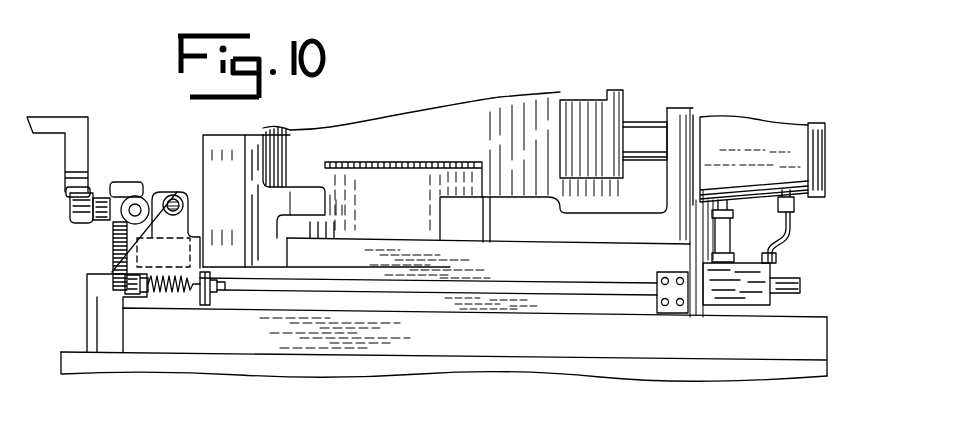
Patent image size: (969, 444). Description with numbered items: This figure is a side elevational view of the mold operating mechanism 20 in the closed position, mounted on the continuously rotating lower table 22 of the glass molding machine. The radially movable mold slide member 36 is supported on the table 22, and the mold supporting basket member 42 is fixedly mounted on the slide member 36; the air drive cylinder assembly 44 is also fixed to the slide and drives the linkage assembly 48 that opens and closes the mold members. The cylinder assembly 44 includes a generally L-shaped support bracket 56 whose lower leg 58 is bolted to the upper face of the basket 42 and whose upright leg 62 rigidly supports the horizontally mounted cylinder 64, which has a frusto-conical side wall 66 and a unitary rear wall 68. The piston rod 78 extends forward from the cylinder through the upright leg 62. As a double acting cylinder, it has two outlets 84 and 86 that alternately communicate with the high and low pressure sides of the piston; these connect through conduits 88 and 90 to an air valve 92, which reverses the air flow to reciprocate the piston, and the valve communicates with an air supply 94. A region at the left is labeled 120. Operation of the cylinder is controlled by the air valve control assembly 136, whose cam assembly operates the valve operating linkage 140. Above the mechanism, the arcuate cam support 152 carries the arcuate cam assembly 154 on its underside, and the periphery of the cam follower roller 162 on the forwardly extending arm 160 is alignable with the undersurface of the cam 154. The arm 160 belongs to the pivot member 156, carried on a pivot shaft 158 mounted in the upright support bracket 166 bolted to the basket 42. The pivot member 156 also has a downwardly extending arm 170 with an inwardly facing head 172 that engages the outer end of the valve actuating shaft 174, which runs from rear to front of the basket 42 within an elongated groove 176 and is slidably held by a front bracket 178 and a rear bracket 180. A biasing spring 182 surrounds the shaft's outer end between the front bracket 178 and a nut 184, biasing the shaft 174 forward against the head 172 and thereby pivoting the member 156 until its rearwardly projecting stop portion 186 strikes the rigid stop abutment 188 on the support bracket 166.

The mold operating mechanism 20 is at (641, 106).
The lower table 22 is at (175, 384).
The mold slide member 36 is at (829, 344).
The mold supporting basket member 42 is at (397, 303).
The air drive cylinder assembly 44 is at (773, 121).
The linkage assembly 48 is at (522, 185).
The support bracket 56 is at (617, 224).
The lower leg 58 is at (571, 236).
The upright leg 62 is at (678, 190).
The cylinder 64 is at (720, 137).
The frusto-conical side wall 66 is at (797, 132).
The rear wall 68 is at (817, 175).
The piston rod 78 is at (648, 122).
The outlet 84 is at (798, 219).
The outlet 86 is at (733, 200).
The conduit 88 is at (792, 247).
The conduit 90 is at (733, 232).
The air valve 92 is at (736, 293).
The air supply 94 is at (808, 293).
The block 120 is at (200, 160).
The air valve control assembly 136 is at (192, 304).
The valve operating linkage 140 is at (220, 296).
The arcuate cam support 152 is at (88, 147).
The arcuate cam assembly 154 is at (65, 187).
The pivot member 156 is at (105, 286).
The pivot shaft 158 is at (130, 219).
The forwardly extending arm 160 is at (97, 224).
The cam follower roller 162 is at (80, 208).
The upright support bracket 166 is at (180, 227).
The downwardly extending arm 170 is at (112, 258).
The head 172 is at (114, 352).
The valve actuating shaft 174 is at (232, 277).
The elongated groove 176 is at (455, 280).
The front bracket 178 is at (212, 305).
The rear bracket 180 is at (670, 288).
The biasing spring 182 is at (185, 295).
The nut 184 is at (151, 258).
The stop portion 186 is at (170, 194).
The stop abutment 188 is at (183, 207).